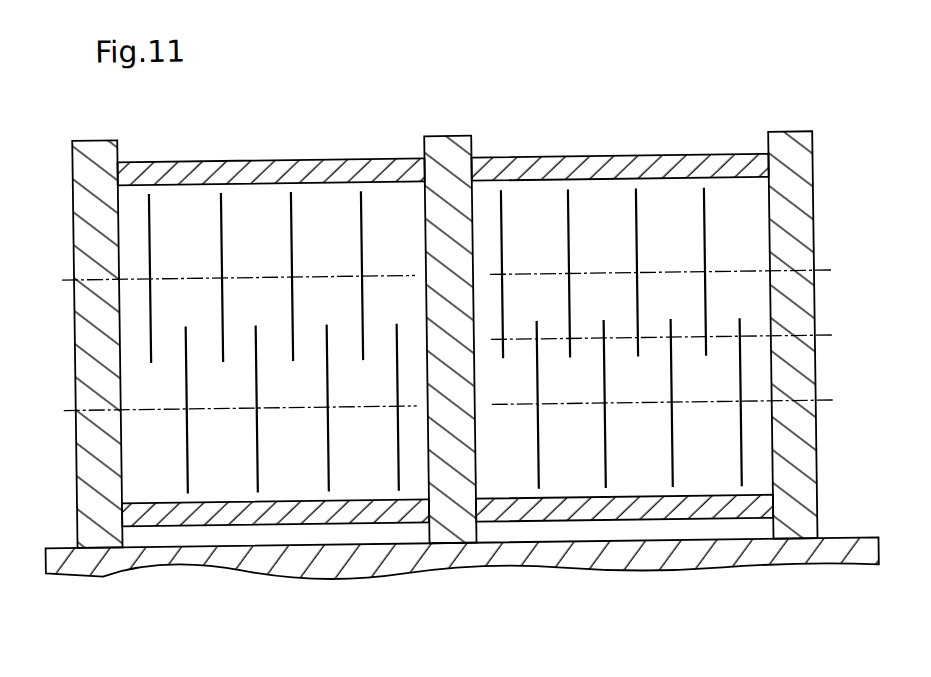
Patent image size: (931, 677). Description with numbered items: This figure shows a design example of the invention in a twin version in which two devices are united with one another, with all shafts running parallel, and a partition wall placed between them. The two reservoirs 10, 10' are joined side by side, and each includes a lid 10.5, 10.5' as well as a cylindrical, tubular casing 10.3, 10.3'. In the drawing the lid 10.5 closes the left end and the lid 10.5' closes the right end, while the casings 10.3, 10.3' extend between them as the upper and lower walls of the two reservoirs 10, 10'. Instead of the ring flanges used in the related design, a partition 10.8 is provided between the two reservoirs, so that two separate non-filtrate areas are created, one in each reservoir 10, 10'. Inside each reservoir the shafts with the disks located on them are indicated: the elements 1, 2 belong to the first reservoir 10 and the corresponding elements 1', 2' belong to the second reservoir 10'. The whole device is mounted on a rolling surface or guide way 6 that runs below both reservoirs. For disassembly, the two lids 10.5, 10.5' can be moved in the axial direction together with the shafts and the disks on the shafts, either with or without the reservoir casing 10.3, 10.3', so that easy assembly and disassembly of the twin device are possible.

The electrode plane (dash-dot line) 1 is at (240, 355).
The electrode fins 2 is at (274, 361).
The electrode plane of second cell 1' is at (662, 366).
The electrode fins of second cell 2' is at (622, 353).
The reservoir 10 is at (276, 562).
The reservoir 10' is at (633, 569).
The cylindrical tubular casing 10.3 is at (272, 143).
The cylindrical tubular casing 10.3' is at (619, 128).
The lid 10.5 is at (102, 378).
The lid 10.5' is at (810, 300).
The partition 10.8 is at (451, 530).
The rolling surface or guide way 6 is at (857, 553).